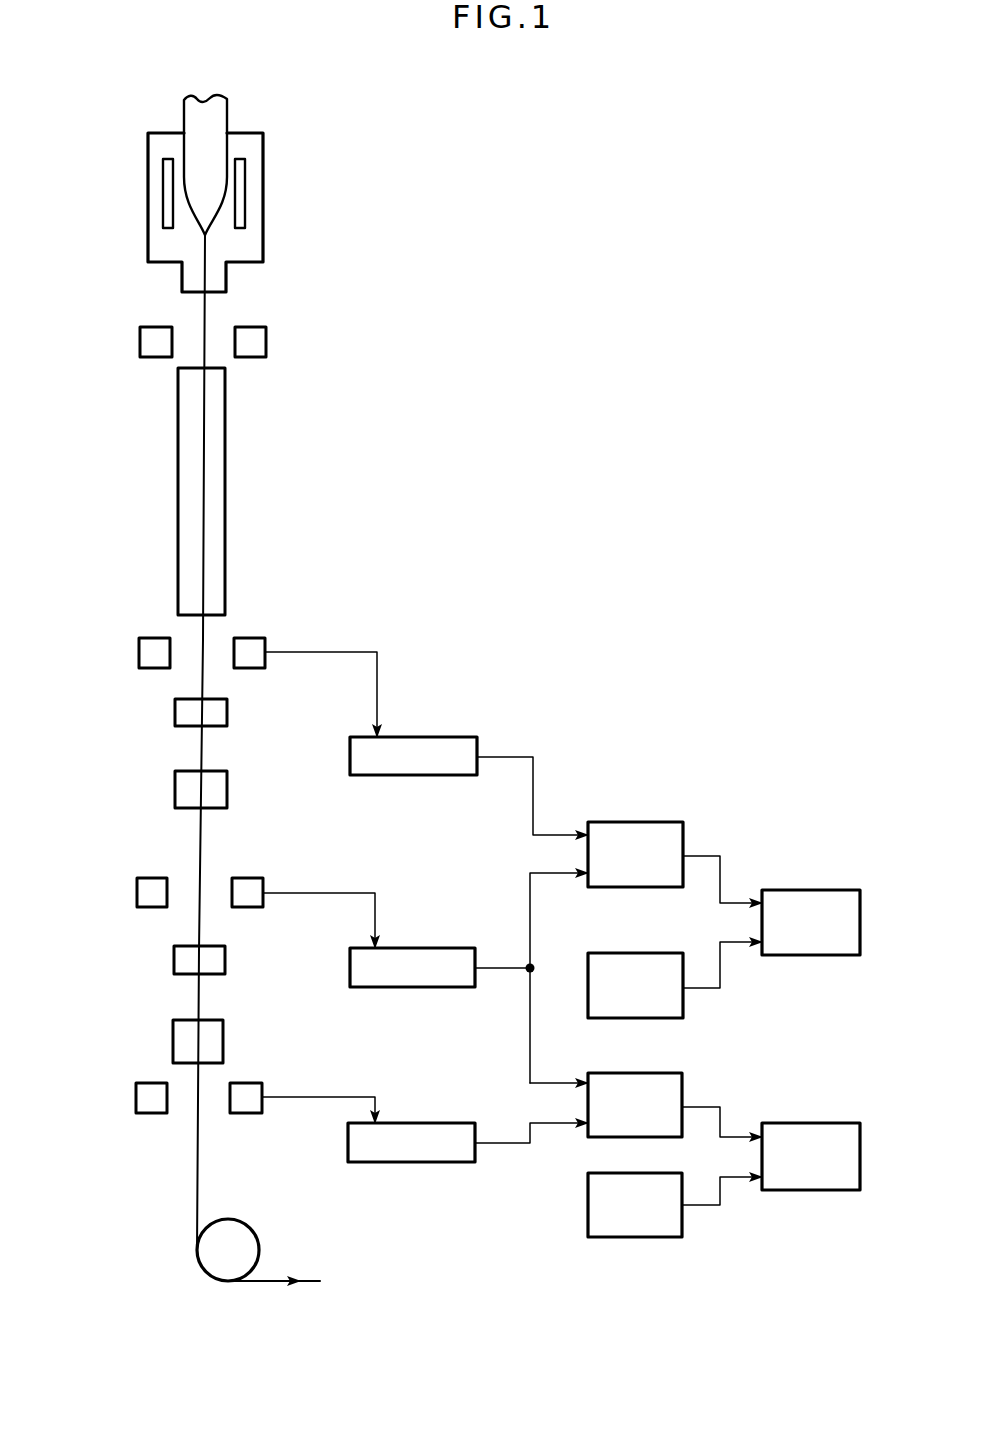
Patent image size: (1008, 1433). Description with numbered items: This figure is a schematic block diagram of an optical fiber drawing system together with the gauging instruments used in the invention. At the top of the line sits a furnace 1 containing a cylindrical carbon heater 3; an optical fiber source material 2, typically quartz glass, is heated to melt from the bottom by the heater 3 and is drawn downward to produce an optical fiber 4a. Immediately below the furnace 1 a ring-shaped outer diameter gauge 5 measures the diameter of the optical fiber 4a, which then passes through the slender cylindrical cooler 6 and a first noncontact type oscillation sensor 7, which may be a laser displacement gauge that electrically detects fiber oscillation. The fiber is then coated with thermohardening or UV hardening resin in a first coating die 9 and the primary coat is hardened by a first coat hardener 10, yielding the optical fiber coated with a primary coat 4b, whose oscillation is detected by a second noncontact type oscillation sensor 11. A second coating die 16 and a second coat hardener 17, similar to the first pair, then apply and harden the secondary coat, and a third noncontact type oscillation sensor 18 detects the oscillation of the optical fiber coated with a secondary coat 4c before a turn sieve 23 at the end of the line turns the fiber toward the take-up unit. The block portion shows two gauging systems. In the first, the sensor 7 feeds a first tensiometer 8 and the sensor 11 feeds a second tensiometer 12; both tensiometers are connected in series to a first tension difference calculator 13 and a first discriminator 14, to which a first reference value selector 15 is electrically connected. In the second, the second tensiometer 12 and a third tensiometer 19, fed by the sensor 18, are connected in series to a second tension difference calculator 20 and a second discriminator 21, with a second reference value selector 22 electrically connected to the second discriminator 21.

The furnace 1 is at (268, 227).
The optical fiber source material 2 is at (230, 110).
The cylindrical carbon heater 3 is at (246, 177).
The optical fiber 4a is at (207, 318).
The optical fiber coated with a primary coat 4b is at (202, 752).
The optical fiber coated with a secondary coat 4c is at (200, 998).
The outer diameter gauge 5 is at (136, 345).
The cooler 6 is at (230, 458).
The first noncontact type oscillation sensor 7 is at (272, 638).
The first tensiometer 8 is at (447, 735).
The first coating die 9 is at (228, 712).
The first coat hardener 10 is at (173, 790).
The second noncontact type oscillation sensor 11 is at (253, 877).
The second tensiometer 12 is at (441, 946).
The first tension difference calculator 13 is at (643, 822).
The first discriminator 14 is at (806, 890).
The first reference value selector 15 is at (650, 958).
The second coating die 16 is at (226, 958).
The second coat hardener 17 is at (170, 1035).
The third noncontact type oscillation sensor 18 is at (253, 1078).
The third tensiometer 19 is at (437, 1122).
The second tension difference calculator 20 is at (663, 1078).
The second discriminator 21 is at (805, 1128).
The second reference value selector 22 is at (653, 1228).
The turn sieve 23 is at (245, 1232).